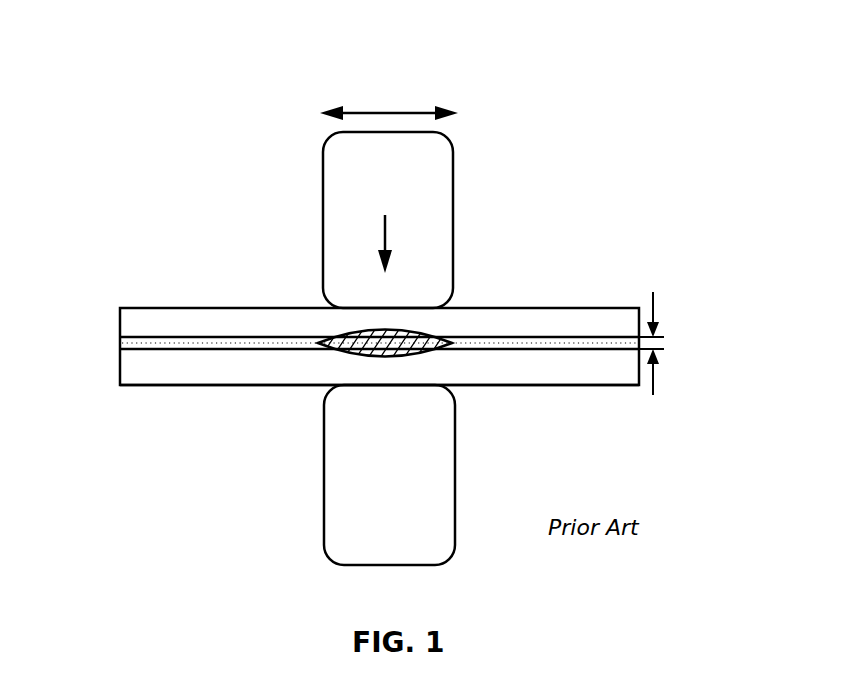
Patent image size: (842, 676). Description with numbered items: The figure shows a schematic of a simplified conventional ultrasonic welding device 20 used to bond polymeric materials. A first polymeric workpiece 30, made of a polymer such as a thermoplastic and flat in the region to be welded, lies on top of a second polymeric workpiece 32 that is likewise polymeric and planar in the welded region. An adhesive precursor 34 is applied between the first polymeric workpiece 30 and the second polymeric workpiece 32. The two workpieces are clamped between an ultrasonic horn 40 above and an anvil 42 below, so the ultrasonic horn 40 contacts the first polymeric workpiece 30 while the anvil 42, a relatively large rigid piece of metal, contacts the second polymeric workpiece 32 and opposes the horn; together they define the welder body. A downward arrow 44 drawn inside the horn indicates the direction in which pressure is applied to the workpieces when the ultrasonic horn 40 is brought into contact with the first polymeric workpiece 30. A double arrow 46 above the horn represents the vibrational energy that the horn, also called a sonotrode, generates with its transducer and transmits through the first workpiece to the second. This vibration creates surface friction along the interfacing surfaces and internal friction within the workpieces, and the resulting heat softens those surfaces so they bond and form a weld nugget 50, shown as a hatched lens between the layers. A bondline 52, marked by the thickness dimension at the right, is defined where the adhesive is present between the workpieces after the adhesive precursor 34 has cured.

The ultrasonic welding device 20 is at (208, 74).
The first polymeric workpiece 30 is at (120, 306).
The second polymeric workpiece 32 is at (120, 383).
The adhesive precursor 34 is at (121, 341).
The ultrasonic horn 40 is at (399, 192).
The anvil 42 is at (409, 492).
The downward arrow 44 is at (386, 232).
The double arrow 46 is at (385, 110).
The weld nugget 50 is at (320, 343).
The bondline 52 is at (661, 344).